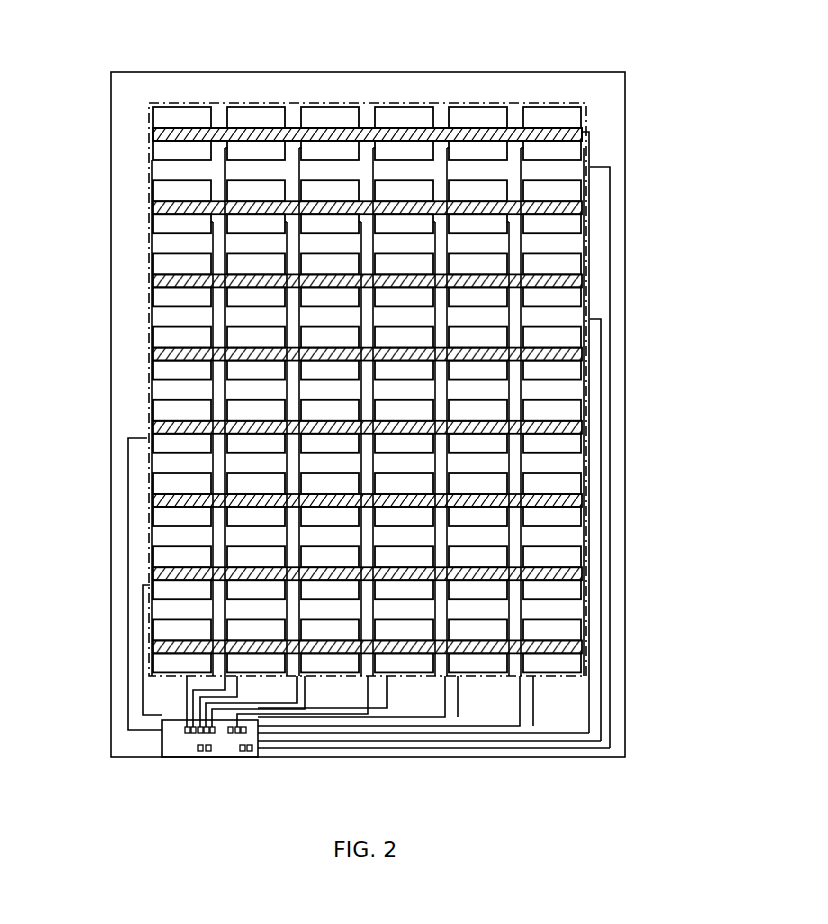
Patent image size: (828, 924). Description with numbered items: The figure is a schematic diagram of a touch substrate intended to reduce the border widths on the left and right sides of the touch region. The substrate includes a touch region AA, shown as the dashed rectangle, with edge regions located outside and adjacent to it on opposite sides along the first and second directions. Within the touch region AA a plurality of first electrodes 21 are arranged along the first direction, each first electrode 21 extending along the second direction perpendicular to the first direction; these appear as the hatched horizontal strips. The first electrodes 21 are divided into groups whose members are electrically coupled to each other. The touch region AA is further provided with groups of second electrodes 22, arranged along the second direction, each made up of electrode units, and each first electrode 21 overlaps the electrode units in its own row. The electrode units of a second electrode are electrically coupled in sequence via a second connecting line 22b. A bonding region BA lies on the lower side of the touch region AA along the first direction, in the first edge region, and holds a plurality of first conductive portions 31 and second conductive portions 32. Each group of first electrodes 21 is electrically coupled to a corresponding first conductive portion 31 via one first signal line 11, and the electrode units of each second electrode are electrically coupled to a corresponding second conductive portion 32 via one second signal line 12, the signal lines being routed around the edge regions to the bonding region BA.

The second electrodes 22 is at (173, 113).
The second connecting line 22b is at (145, 175).
The first electrodes 21 is at (550, 128).
The touch region AA is at (293, 103).
The first signal lines 11 is at (612, 235).
The second signal lines 12 is at (535, 715).
The bonding region BA is at (215, 752).
The first conductive portions 31 is at (160, 748).
The second conductive portions 32 is at (237, 733).